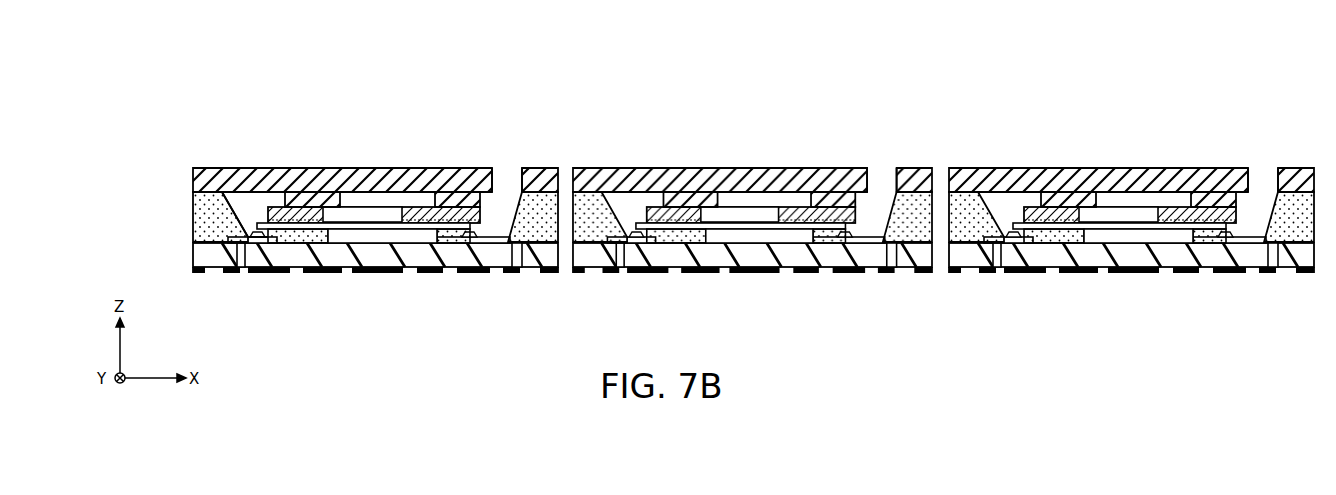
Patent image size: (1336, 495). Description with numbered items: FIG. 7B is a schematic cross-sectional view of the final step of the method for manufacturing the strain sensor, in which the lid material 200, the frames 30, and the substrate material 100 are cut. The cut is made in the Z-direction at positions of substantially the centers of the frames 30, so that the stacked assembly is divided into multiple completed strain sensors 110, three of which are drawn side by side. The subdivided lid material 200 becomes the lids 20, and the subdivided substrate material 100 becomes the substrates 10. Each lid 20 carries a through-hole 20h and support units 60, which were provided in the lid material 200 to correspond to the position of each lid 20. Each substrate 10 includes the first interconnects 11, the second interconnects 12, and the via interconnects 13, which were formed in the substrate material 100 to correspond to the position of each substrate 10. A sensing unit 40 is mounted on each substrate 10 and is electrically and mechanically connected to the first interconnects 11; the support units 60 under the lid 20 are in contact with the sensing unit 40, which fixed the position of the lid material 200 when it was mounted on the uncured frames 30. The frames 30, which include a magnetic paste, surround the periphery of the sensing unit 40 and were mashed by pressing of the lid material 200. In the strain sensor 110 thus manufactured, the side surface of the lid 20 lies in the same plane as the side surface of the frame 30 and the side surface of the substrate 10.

The substrate 10 is at (368, 252).
The first interconnect 11 is at (270, 238).
The second interconnect 12 is at (313, 272).
The via interconnect 13 is at (241, 268).
The lid 20 is at (352, 168).
The through-hole 20h is at (513, 168).
The frame 30 is at (215, 218).
The sensing unit 40 is at (333, 207).
The support unit 60 is at (310, 197).
The substrate material 100 is at (245, 203).
The strain sensor 110 is at (421, 108).
The lid material 200 is at (262, 158).